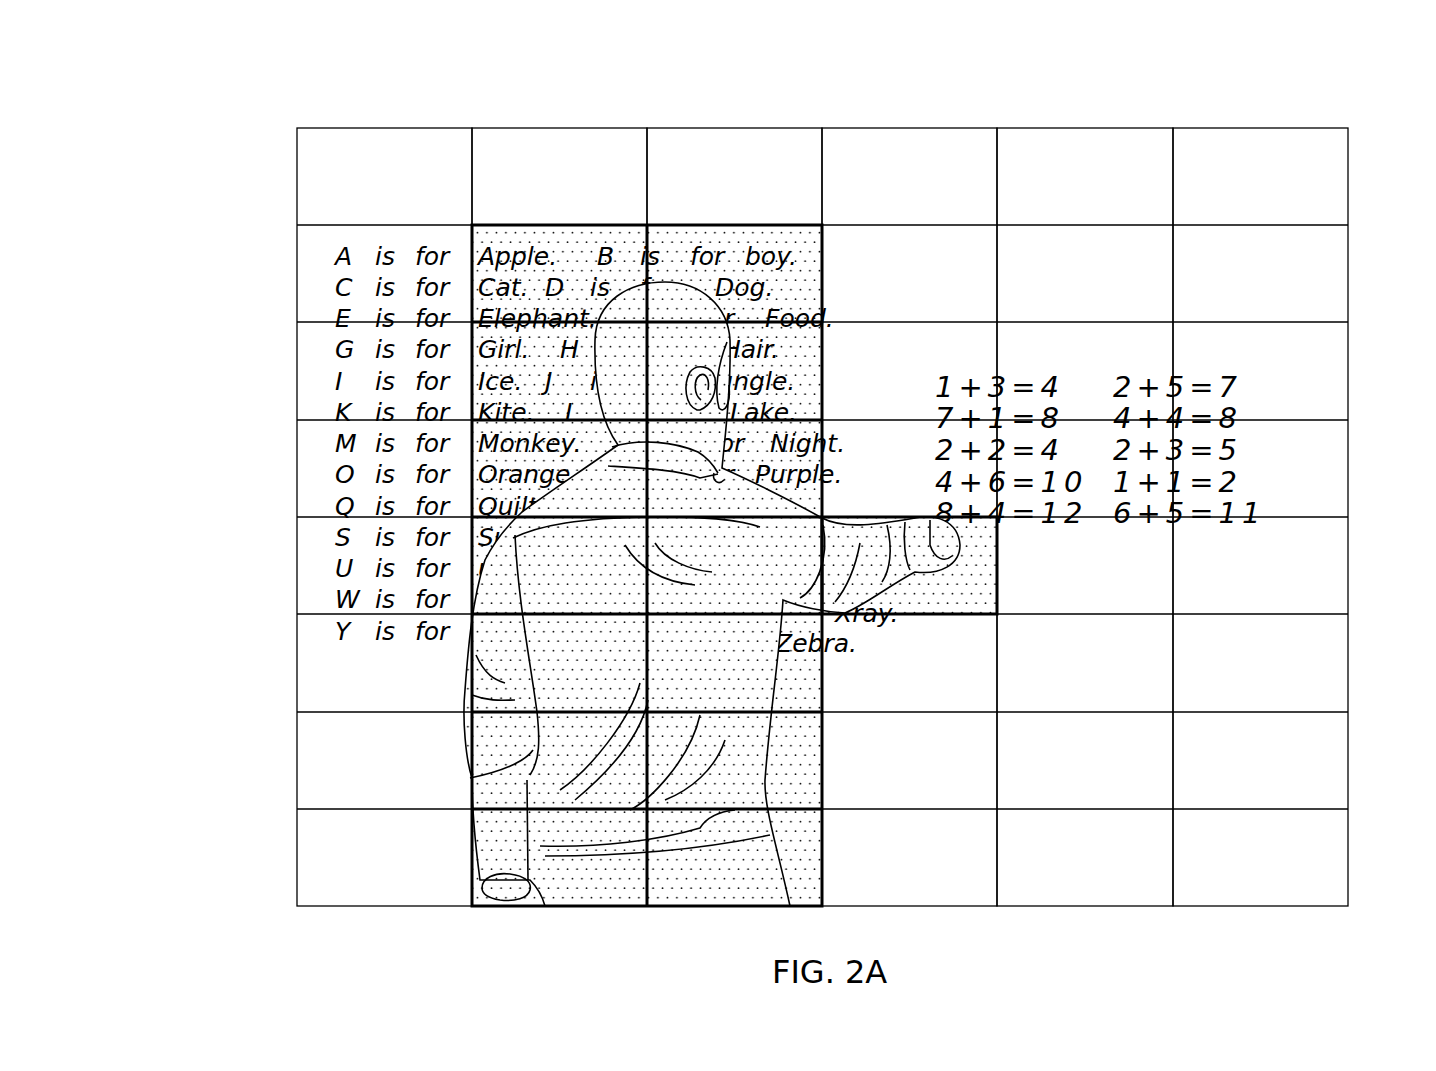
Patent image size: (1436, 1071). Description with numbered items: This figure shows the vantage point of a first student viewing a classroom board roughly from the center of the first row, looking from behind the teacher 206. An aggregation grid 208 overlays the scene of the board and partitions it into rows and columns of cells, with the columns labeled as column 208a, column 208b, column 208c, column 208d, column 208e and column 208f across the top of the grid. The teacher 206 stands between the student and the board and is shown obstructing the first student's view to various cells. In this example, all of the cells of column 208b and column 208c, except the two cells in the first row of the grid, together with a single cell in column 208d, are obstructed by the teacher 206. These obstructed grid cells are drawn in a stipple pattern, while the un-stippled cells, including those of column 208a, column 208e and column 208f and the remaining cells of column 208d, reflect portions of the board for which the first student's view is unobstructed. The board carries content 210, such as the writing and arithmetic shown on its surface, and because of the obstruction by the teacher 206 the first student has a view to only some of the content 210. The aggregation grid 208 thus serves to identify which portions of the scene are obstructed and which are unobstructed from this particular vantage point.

The teacher 206 is at (596, 888).
The aggregation grid 208 is at (713, 487).
The column of aggregation grid 208a is at (394, 128).
The column of aggregation grid 208b is at (559, 128).
The column of aggregation grid 208c is at (736, 128).
The column of aggregation grid 208d is at (908, 128).
The column of aggregation grid 208e is at (1080, 128).
The column of aggregation grid 208f is at (1256, 128).
The content 210 is at (908, 357).